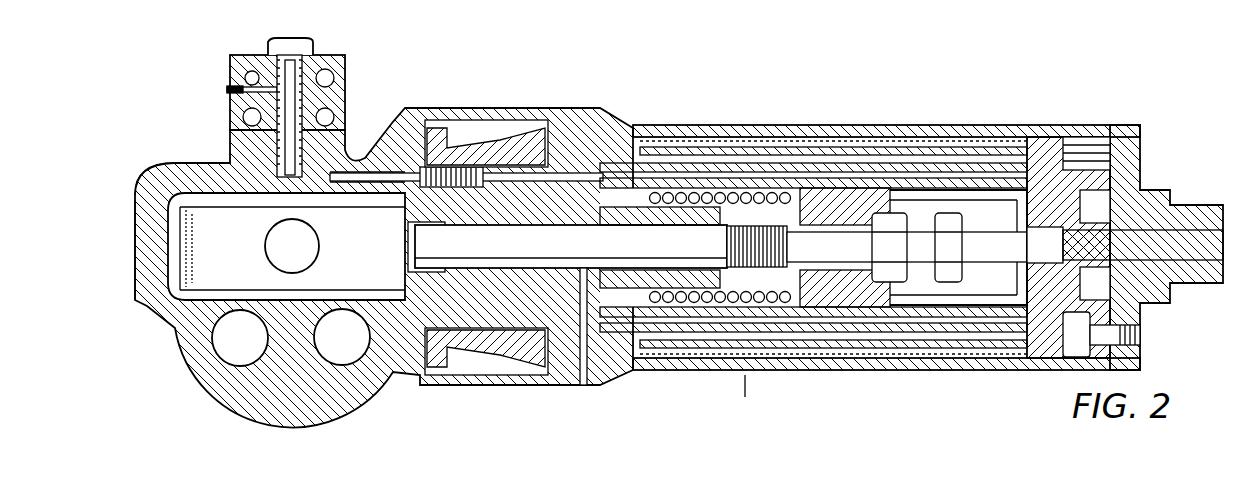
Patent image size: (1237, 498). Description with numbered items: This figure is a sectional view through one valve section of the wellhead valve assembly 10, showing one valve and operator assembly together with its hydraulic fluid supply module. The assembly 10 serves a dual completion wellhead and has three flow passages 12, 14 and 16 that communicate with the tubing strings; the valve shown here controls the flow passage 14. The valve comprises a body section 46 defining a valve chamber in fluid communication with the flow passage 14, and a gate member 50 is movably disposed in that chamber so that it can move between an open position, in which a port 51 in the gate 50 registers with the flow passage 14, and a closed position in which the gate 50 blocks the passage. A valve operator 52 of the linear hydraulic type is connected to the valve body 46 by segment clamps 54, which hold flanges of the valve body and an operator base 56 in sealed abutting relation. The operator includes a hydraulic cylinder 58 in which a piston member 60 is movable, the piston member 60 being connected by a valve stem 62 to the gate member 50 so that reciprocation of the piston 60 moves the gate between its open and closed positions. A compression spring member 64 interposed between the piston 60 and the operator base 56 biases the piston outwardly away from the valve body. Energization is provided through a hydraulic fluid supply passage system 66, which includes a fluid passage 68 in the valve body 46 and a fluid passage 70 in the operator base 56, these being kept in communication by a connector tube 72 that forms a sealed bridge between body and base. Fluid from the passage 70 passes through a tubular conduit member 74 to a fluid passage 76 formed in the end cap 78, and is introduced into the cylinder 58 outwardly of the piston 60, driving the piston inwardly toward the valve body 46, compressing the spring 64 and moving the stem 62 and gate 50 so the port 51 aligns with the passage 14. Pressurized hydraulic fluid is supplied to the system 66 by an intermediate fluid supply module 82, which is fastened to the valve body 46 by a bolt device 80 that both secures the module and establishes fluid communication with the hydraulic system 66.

The wellhead valve assembly 10 is at (296, 428).
The flow passage 12 is at (253, 350).
The flow passage 14 is at (305, 258).
The flow passage 16 is at (355, 349).
The body section 46 is at (150, 235).
The gate member 50 is at (140, 192).
The port 51 is at (268, 242).
The valve operator 52 is at (745, 373).
The segment clamps 54 is at (472, 352).
The operator base 56 is at (570, 340).
The hydraulic cylinder 58 is at (970, 310).
The piston member 60 is at (857, 307).
The valve stem 62 is at (631, 252).
The compression spring member 64 is at (787, 293).
The hydraulic fluid supply passage system 66 is at (663, 162).
The fluid passage 68 is at (377, 177).
The fluid passage 70 is at (560, 190).
The connector tube 72 is at (460, 170).
The tubular conduit member 74 is at (748, 155).
The fluid passage 76 is at (1017, 160).
The end cap 78 is at (1053, 183).
The bolt device 80 is at (270, 45).
The intermediate fluid supply module 82 is at (240, 121).